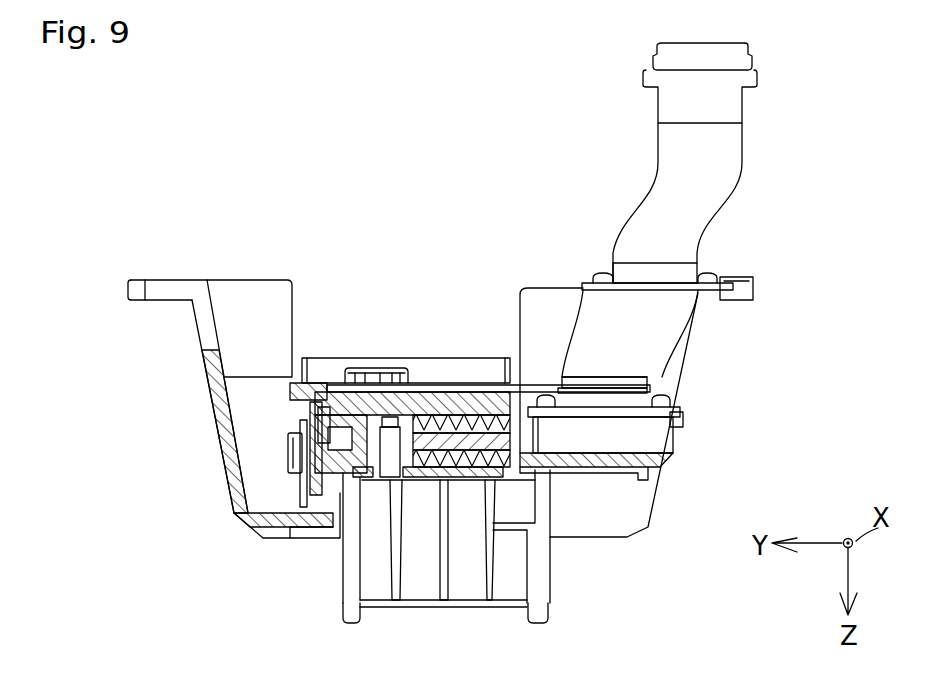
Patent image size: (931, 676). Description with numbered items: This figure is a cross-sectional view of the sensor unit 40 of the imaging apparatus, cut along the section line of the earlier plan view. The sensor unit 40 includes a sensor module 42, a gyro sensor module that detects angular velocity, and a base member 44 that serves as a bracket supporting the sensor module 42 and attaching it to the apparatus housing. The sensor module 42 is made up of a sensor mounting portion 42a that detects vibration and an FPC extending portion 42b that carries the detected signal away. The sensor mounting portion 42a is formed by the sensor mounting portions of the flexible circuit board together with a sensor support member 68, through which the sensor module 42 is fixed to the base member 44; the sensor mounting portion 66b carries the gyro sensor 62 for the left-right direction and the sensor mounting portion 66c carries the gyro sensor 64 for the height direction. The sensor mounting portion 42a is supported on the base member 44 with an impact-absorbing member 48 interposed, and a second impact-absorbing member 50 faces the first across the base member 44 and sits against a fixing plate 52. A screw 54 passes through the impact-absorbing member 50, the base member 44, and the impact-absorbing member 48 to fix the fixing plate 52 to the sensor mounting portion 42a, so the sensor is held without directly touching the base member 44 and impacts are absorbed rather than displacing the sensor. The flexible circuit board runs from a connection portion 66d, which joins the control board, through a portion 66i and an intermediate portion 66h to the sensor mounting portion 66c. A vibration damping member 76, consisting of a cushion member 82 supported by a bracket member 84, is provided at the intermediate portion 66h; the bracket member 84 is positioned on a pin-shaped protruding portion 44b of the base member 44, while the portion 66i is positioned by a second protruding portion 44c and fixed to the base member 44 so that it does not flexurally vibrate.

The sensor unit 40 is at (258, 179).
The sensor module 42 is at (470, 392).
The sensor mounting portion 42a is at (430, 360).
The FPC extending portion 42b is at (678, 210).
The base member 44 is at (652, 412).
The positioning protruding portion 44b is at (540, 395).
The protruding portion 44c is at (600, 273).
The impact-absorbing member 48 is at (455, 393).
The impact-absorbing member 50 is at (535, 493).
The fixing plate 52 is at (468, 480).
The screw 54 is at (395, 480).
The gyro sensor 62 is at (290, 453).
The gyro sensor 64 is at (375, 368).
The sensor mounting portion 66b is at (301, 423).
The sensor mounting portion 66c is at (478, 390).
The connection portion 66d is at (722, 53).
The intermediate portion 66h is at (606, 377).
The portion of the flexible circuit board 66i is at (655, 282).
The sensor support member 68 is at (318, 383).
The vibration damping member 76 is at (649, 402).
The cushion member 82 is at (633, 393).
The bracket member 84 is at (623, 412).